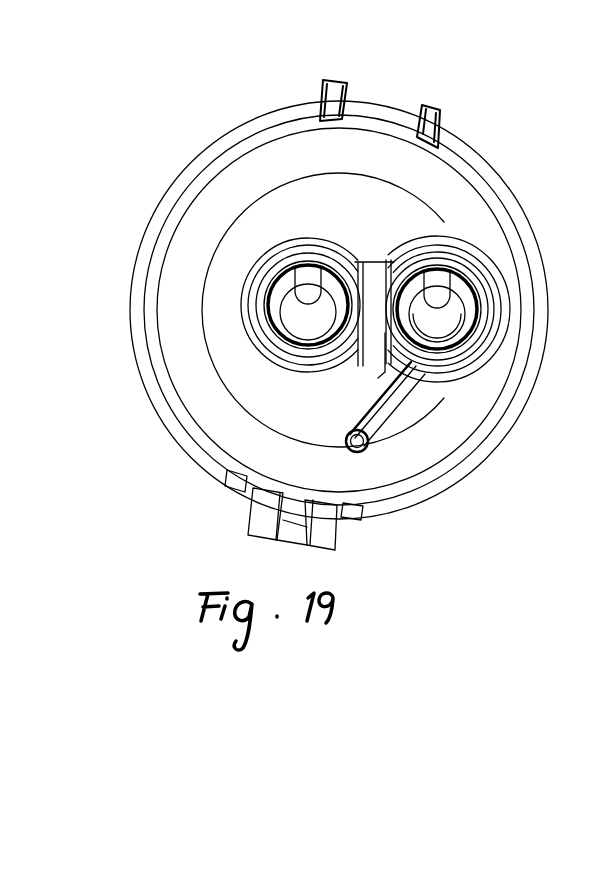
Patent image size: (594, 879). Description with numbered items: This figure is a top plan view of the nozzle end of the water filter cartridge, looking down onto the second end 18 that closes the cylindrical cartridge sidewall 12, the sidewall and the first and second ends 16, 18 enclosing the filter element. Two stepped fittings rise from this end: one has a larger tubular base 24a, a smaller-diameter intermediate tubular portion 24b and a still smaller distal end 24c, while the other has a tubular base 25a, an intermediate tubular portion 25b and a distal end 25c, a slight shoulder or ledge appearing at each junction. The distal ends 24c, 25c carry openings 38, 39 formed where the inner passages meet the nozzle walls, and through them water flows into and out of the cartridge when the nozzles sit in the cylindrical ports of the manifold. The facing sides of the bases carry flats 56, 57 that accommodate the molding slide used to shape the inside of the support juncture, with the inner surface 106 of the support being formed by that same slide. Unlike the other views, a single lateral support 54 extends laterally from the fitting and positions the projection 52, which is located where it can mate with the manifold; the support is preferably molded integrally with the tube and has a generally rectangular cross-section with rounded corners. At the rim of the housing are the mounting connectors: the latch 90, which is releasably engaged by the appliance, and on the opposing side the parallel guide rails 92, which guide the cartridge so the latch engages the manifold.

The cartridge sidewall 12 is at (227, 475).
The first end 16 is at (253, 394).
The second end 18 is at (165, 415).
The tubular base 24a is at (472, 271).
The intermediate tubular portion 24b is at (447, 277).
The distal end 24c is at (440, 337).
The tubular base 25a is at (262, 345).
The intermediate tubular portion 25b is at (277, 320).
The distal end 25c is at (287, 313).
The opening 38 is at (440, 285).
The opening 39 is at (305, 290).
The projection 52 is at (362, 450).
The lateral support 54 is at (385, 418).
The flat surface 56 is at (382, 287).
The flat surface 57 is at (362, 267).
The first mounting connector 90 is at (330, 532).
The second mounting connector 92 is at (347, 85).
The inner surface 106 is at (352, 426).